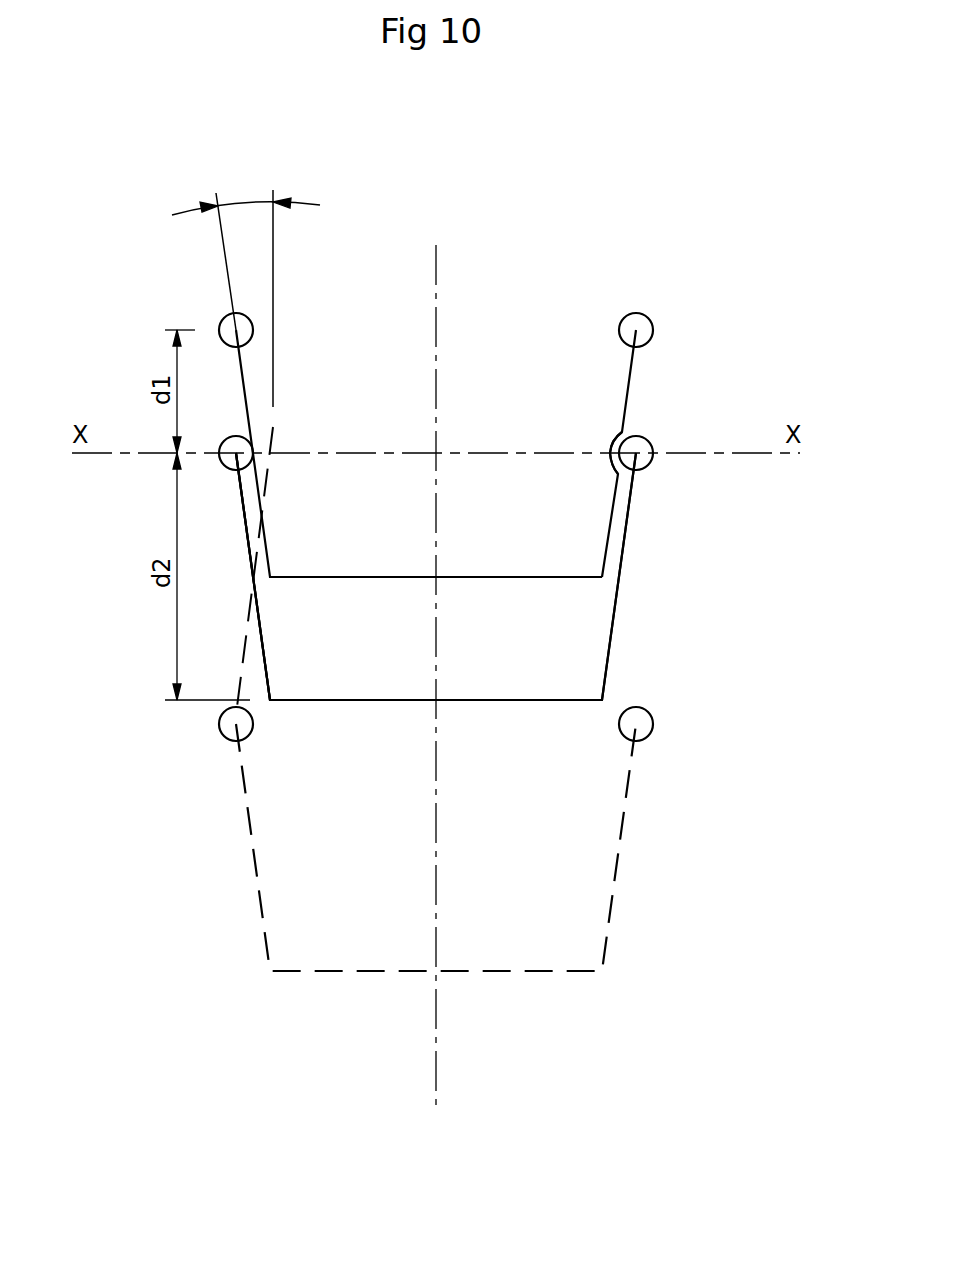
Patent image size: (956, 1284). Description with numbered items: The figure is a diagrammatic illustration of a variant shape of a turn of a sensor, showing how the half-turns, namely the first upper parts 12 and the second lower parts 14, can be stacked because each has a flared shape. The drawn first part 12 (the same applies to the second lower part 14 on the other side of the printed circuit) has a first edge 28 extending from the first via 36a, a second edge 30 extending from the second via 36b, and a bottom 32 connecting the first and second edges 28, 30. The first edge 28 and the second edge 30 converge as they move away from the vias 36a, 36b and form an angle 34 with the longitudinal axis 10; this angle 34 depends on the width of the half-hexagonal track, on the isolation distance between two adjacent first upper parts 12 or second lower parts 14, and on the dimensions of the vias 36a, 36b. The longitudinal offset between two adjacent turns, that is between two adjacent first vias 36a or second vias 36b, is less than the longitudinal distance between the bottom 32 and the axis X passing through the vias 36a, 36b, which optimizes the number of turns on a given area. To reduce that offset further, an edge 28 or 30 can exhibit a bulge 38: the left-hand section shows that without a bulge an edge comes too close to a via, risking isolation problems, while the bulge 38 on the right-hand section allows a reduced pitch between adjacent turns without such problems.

The longitudinal axis 10 is at (435, 287).
The first upper part 12 is at (612, 653).
The second lower part 14 is at (252, 588).
The first edge 28 is at (255, 623).
The second edge 30 is at (617, 612).
The bottom 32 is at (463, 701).
The angle 34 is at (246, 291).
The first via 36a is at (219, 443).
The second via 36b is at (652, 442).
The bulge 38 is at (612, 440).